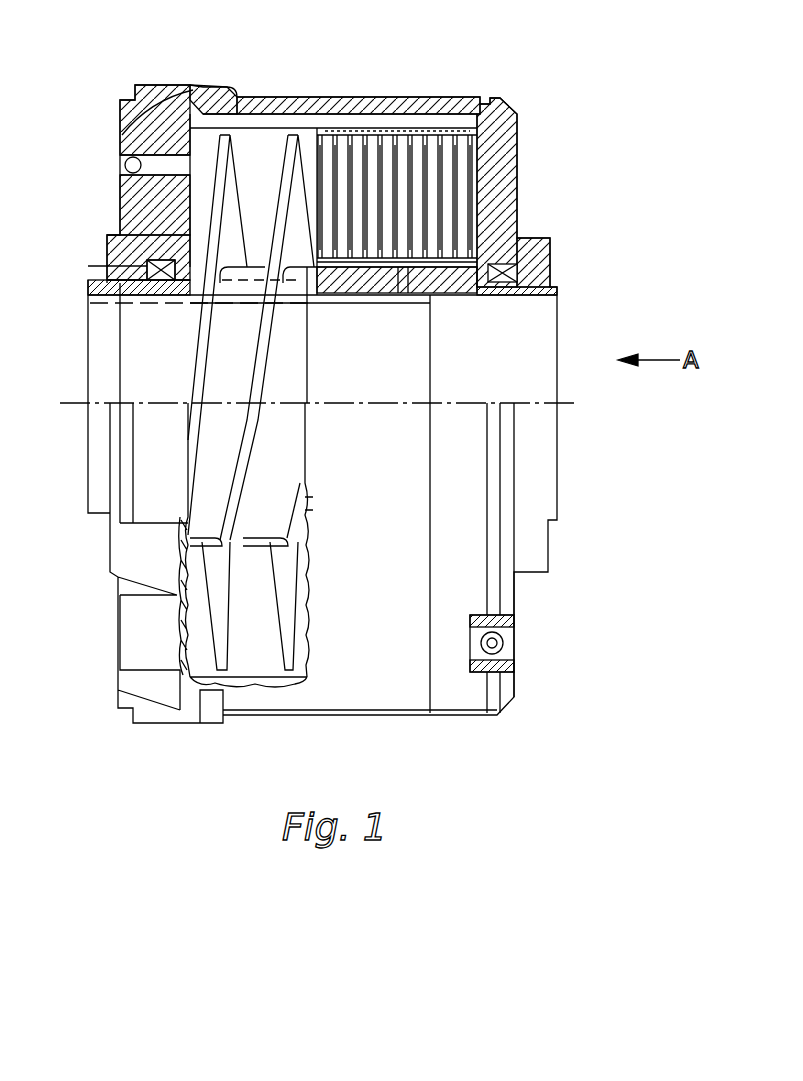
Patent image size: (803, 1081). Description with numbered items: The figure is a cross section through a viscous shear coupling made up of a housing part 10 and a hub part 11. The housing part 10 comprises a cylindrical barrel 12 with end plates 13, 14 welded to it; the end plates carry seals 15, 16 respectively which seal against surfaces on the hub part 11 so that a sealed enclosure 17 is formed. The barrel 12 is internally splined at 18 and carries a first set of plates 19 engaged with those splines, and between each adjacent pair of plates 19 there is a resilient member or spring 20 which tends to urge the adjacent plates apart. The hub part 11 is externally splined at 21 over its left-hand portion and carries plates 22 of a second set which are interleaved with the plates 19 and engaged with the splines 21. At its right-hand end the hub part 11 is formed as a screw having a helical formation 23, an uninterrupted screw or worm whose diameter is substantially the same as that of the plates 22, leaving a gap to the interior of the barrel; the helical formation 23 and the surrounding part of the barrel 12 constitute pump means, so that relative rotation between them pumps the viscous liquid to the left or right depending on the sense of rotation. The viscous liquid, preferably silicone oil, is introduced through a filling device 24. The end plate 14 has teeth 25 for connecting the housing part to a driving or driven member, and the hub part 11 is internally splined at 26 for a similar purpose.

The housing part 10 is at (424, 82).
The hub part 11 is at (508, 295).
The cylindrical barrel 12 is at (250, 97).
The end plate 13 is at (505, 180).
The end plate 14 is at (107, 243).
The seal 15 is at (516, 266).
The seal 16 is at (160, 272).
The sealed enclosure 17 is at (253, 258).
The internal splines 18 is at (285, 116).
The plates of first set 19 is at (470, 126).
The resilient members or springs 20 is at (356, 128).
The external splines 21 is at (370, 285).
The plates of second set 22 is at (412, 265).
The helical formation 23 is at (277, 218).
The filling device 24 is at (125, 166).
The teeth 25 is at (150, 94).
The internal splines 26 is at (120, 300).